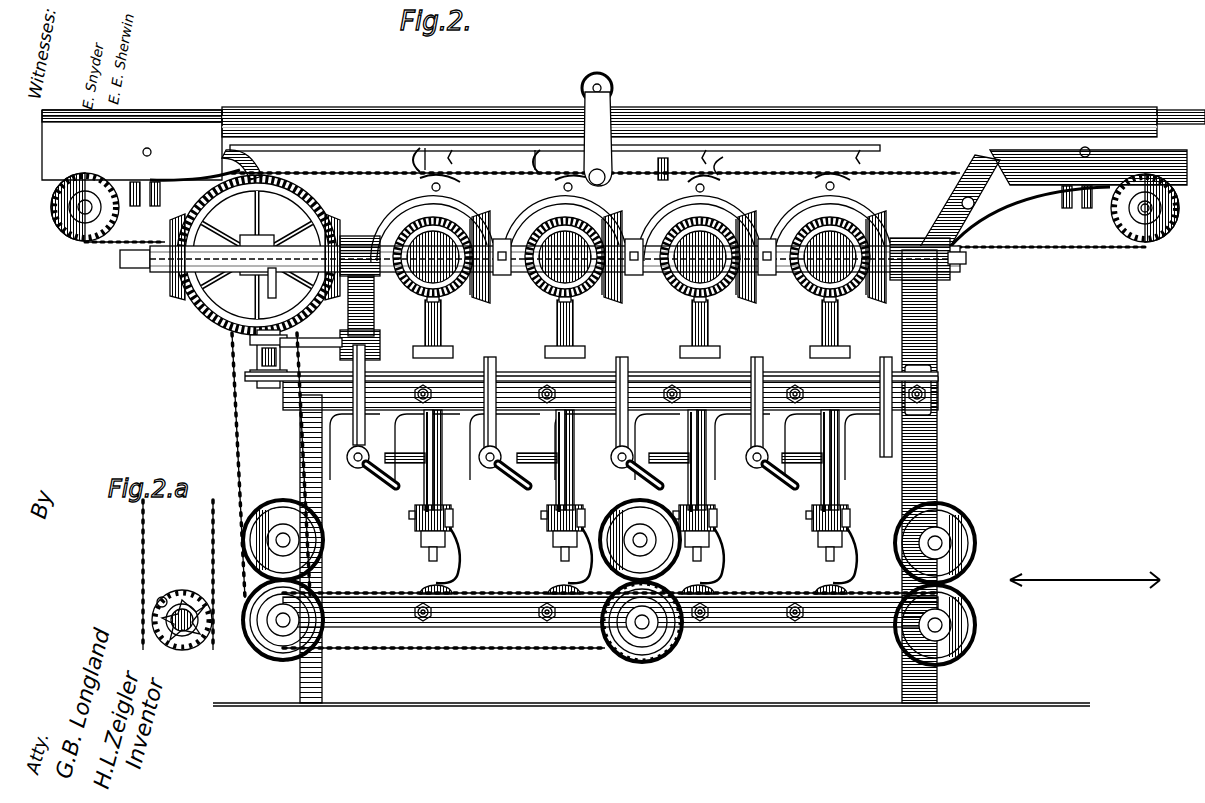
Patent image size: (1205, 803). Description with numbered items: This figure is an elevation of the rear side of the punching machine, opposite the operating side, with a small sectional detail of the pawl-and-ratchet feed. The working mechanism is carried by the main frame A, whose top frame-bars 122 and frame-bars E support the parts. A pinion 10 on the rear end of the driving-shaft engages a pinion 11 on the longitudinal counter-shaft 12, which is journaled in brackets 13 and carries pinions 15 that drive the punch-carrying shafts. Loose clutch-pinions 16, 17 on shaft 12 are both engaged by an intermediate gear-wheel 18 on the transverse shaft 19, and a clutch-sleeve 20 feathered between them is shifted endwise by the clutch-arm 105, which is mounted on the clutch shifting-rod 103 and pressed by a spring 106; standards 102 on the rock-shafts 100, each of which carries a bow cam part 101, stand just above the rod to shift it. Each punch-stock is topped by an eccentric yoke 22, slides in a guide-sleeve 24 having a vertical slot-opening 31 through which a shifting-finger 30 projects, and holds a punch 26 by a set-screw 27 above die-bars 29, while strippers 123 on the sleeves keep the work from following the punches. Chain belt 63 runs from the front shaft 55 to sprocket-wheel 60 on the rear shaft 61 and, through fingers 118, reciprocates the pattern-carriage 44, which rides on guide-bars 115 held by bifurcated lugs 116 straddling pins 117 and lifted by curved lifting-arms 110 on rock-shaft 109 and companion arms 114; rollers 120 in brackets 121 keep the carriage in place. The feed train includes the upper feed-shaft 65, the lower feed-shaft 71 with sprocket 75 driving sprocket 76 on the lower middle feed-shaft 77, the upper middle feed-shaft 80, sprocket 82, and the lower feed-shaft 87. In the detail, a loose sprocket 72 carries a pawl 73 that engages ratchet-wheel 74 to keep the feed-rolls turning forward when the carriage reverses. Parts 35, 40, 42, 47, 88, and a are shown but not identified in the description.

In FIG. 2, the pinion 10 is at (420, 292).
In FIG. 2, the pinion 11 is at (470, 304).
In FIG. 2, the counter-shaft 12 is at (125, 268).
In FIG. 2, the brackets 13 is at (372, 312).
In FIG. 2, the pinions 15 is at (625, 290).
In FIG. 2, the clutch-pinion 16 is at (342, 222).
In FIG. 2, the clutch-pinion 17 is at (168, 285).
In FIG. 2, the intermediate gear-wheel 18 is at (225, 182).
In FIG. 2, the transverse shaft 19 is at (610, 298).
In FIG. 2, the clutch-sleeve 20 is at (250, 238).
In FIG. 2, the eccentric yoke 22 is at (495, 225).
In FIG. 2, the guide-sleeves 24 is at (445, 470).
In FIG. 2, the punch 26 is at (428, 555).
In FIG. 2, the set-screw 27 is at (412, 532).
In FIG. 2, the die-bars 29 is at (420, 588).
In FIG. 2, the shifting-finger 30 is at (806, 455).
In FIG. 2, the vertical slot-opening 31 is at (420, 496).
In FIG. 2, the pin 35 is at (320, 240).
In FIG. 2, the pawl 40 is at (615, 165).
In FIG. 2, the pawl 42 is at (473, 153).
In FIG. 2, the pattern-carriage 44 is at (420, 107).
In FIG. 2, the lug 47 is at (465, 160).
In FIG. 2, the transverse shaft 55 is at (75, 220).
In FIG. 2, the sprocket-wheel 60 is at (1140, 244).
In FIG. 2, the shaft 61 is at (1150, 208).
In FIG. 2, the chain belt 63 is at (110, 248).
In FIG. 2, the upper feed-shaft 65 is at (295, 530).
In FIG. 2, the lower feed-shaft 71 is at (290, 612).
In FIG. 2A, the lower feed-shaft 71 is at (200, 630).
In FIG. 2, the sprocket 72 is at (325, 562).
In FIG. 2A, the sprocket 72 is at (192, 580).
In FIG. 2A, the pawl 73 is at (160, 600).
In FIG. 2A, the ratchet-wheel 74 is at (184, 632).
In FIG. 2, the sprocket 75 is at (320, 640).
In FIG. 2, the sprocket 76 is at (470, 652).
In FIG. 2, the lower middle feed-shaft 77 is at (665, 630).
In FIG. 2, the upper middle feed-shaft 80 is at (636, 535).
In FIG. 2, the sprocket 82 is at (945, 543).
In FIG. 2, the lower feed-shaft 87 is at (945, 625).
In FIG. 2, the chain 88 is at (700, 580).
In FIG. 2, the rock-shafts 100 is at (356, 468).
In FIG. 2, the bow cam part 101 is at (396, 485).
In FIG. 2, the standard 102 is at (356, 412).
In FIG. 2, the clutch shifting-rod 103 is at (645, 376).
In FIG. 2, the clutch-arm 105 is at (235, 328).
In FIG. 2, the spring 106 is at (255, 372).
In FIG. 2, the transverse rock-shaft 109 is at (975, 210).
In FIG. 2, the curved lifting-arms 110 is at (945, 190).
In FIG. 2, the curved lifting-arms 114 is at (268, 165).
In FIG. 2, the guide-bars 115 is at (162, 110).
In FIG. 2, the bifurcated lugs 116 is at (153, 204).
In FIG. 2, the pins 117 is at (142, 152).
In FIG. 2, the fingers 118 is at (739, 178).
In FIG. 2, the rollers 120 is at (580, 85).
In FIG. 2, the brackets 121 is at (606, 110).
In FIG. 2, the top frame-bars 122 is at (195, 125).
In FIG. 2, the strippers 123 is at (500, 578).
In FIG. 2, the main frame A is at (543, 273).
In FIG. 2, the frame-bars E is at (790, 628).
In FIG. 2, the chain a is at (430, 200).